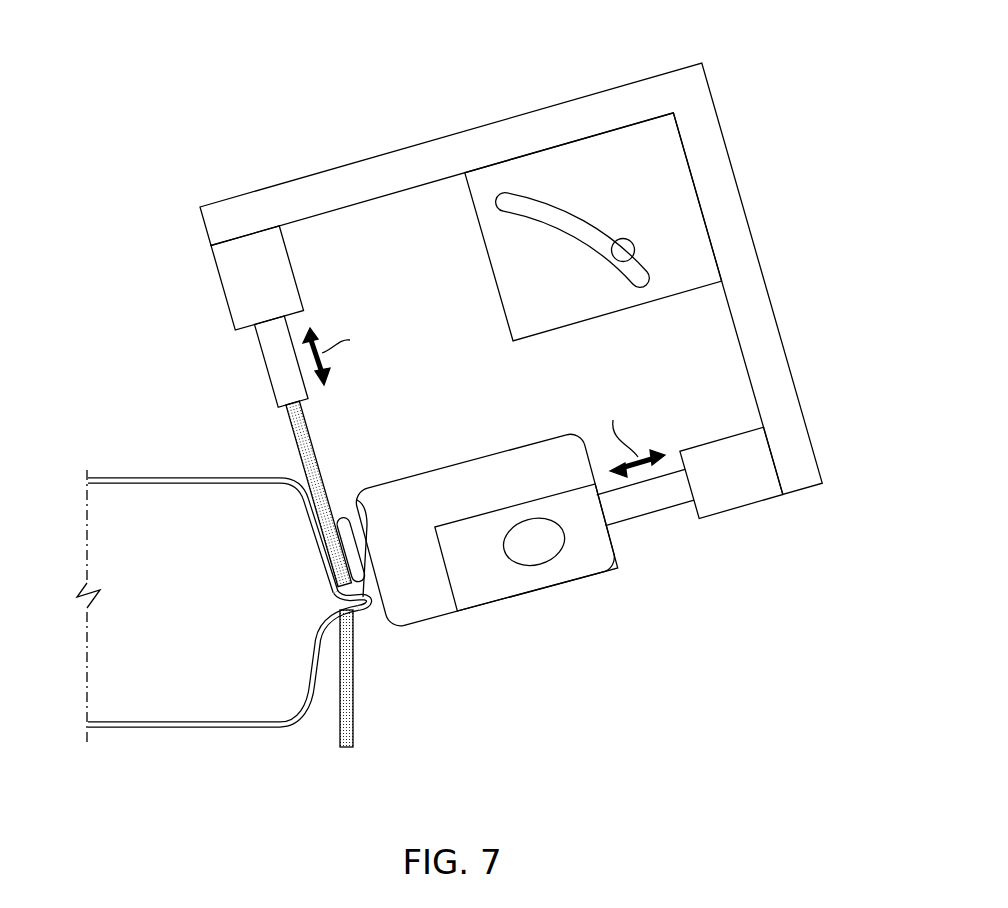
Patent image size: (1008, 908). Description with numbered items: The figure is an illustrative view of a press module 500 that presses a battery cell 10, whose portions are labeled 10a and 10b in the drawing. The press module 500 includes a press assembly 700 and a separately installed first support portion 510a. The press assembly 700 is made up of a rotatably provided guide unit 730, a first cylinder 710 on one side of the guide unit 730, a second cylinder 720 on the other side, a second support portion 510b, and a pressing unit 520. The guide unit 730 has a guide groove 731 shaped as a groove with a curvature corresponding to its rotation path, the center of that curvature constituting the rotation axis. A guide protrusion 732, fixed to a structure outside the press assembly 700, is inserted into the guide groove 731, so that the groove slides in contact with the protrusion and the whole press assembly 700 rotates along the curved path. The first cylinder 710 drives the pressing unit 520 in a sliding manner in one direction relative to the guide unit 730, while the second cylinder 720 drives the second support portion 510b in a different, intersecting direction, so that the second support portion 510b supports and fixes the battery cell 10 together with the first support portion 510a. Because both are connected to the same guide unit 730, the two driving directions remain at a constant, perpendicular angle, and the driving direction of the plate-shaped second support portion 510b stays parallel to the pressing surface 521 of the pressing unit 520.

The battery cell 10 is at (147, 466).
The lower portion of panel 10a is at (153, 705).
The bent edge portion of panel 10b is at (343, 514).
The press module 500 is at (265, 91).
The first support portion 510a is at (347, 712).
The second support portion 510b is at (304, 476).
The pressing unit 520 is at (548, 578).
The pressing surface 521 is at (375, 625).
The press assembly 700 is at (752, 636).
The first cylinder 710 is at (733, 495).
The second cylinder 720 is at (228, 287).
The guide unit 730 is at (622, 157).
The guide groove 731 is at (535, 200).
The guide protrusion 732 is at (622, 244).